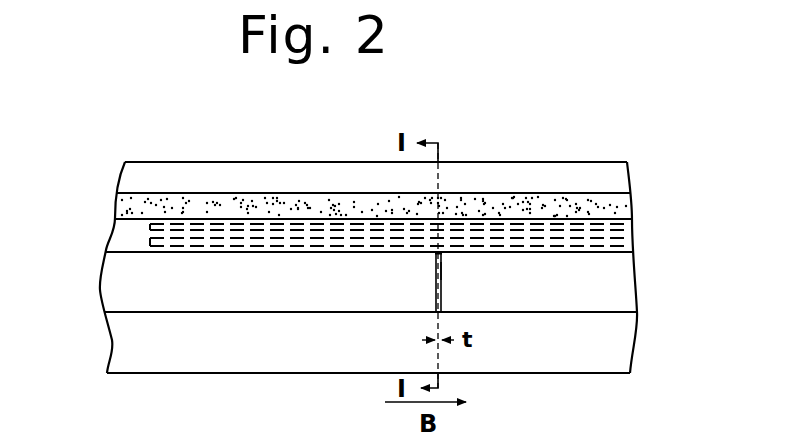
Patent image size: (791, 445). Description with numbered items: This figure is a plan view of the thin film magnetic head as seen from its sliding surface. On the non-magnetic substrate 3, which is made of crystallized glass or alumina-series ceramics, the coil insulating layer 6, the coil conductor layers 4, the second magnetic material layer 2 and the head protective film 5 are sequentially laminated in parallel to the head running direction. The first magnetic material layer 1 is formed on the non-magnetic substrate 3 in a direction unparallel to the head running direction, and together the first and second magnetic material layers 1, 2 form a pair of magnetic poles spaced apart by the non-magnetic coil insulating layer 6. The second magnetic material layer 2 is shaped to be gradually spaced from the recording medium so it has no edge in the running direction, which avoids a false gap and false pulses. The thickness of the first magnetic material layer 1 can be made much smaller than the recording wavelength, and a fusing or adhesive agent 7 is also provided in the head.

The first magnetic material layer 1 is at (441, 270).
The second magnetic material layer 2 is at (622, 213).
The non-magnetic substrate 3 is at (620, 293).
The coil conductor layers 4 is at (632, 232).
The head protective film 5 is at (620, 181).
The coil insulating layer 6 is at (123, 238).
The fusing or adhesive agent 7 is at (436, 300).